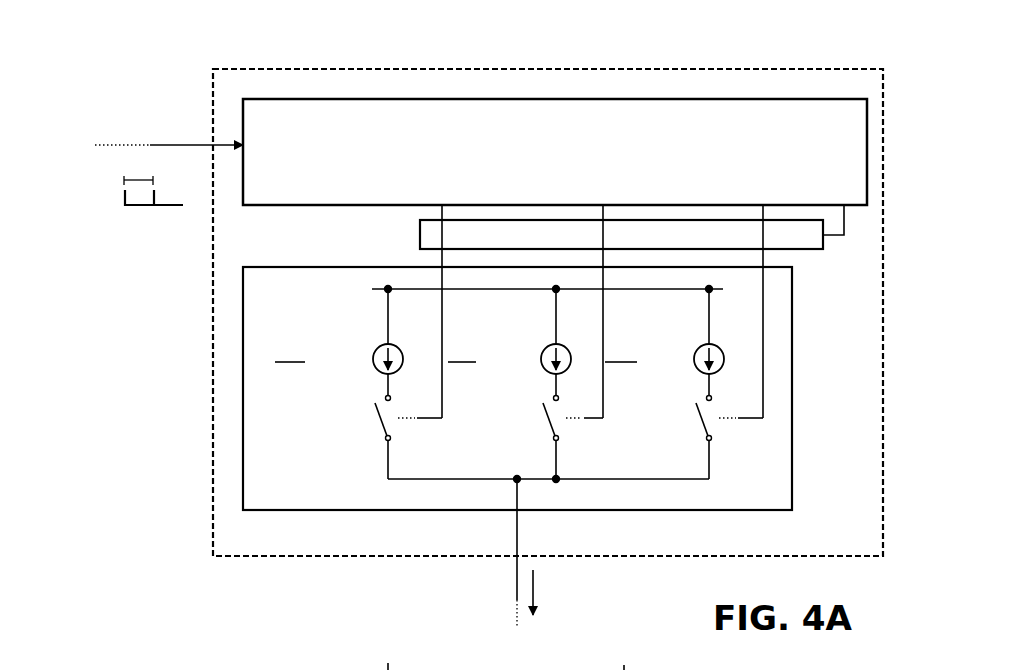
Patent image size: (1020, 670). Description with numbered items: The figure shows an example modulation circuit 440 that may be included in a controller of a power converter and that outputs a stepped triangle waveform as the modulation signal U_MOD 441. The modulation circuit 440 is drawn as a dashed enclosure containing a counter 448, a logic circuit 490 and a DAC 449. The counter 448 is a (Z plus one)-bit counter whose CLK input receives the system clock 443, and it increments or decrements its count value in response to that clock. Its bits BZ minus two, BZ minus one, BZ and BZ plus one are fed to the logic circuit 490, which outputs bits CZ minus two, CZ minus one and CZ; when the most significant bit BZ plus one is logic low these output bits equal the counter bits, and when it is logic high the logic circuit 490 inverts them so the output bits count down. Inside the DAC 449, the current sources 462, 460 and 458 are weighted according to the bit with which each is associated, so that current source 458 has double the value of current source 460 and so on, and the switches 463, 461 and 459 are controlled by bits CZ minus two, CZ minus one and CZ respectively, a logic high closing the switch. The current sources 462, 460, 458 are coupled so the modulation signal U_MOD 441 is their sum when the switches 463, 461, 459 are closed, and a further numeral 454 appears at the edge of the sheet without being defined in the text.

The modulation circuit 440 is at (268, 63).
The system clock 443 is at (110, 93).
The counter 448 is at (818, 92).
The logic circuit 490 is at (413, 238).
The DAC 449 is at (807, 382).
The current source 462 is at (371, 339).
The current source 460 is at (541, 339).
The current source 458 is at (694, 338).
The switch 463 is at (373, 425).
The switch 461 is at (540, 425).
The switch 459 is at (693, 425).
The modulation signal U_MOD 441 is at (438, 585).
The signal waveform 454 is at (502, 654).